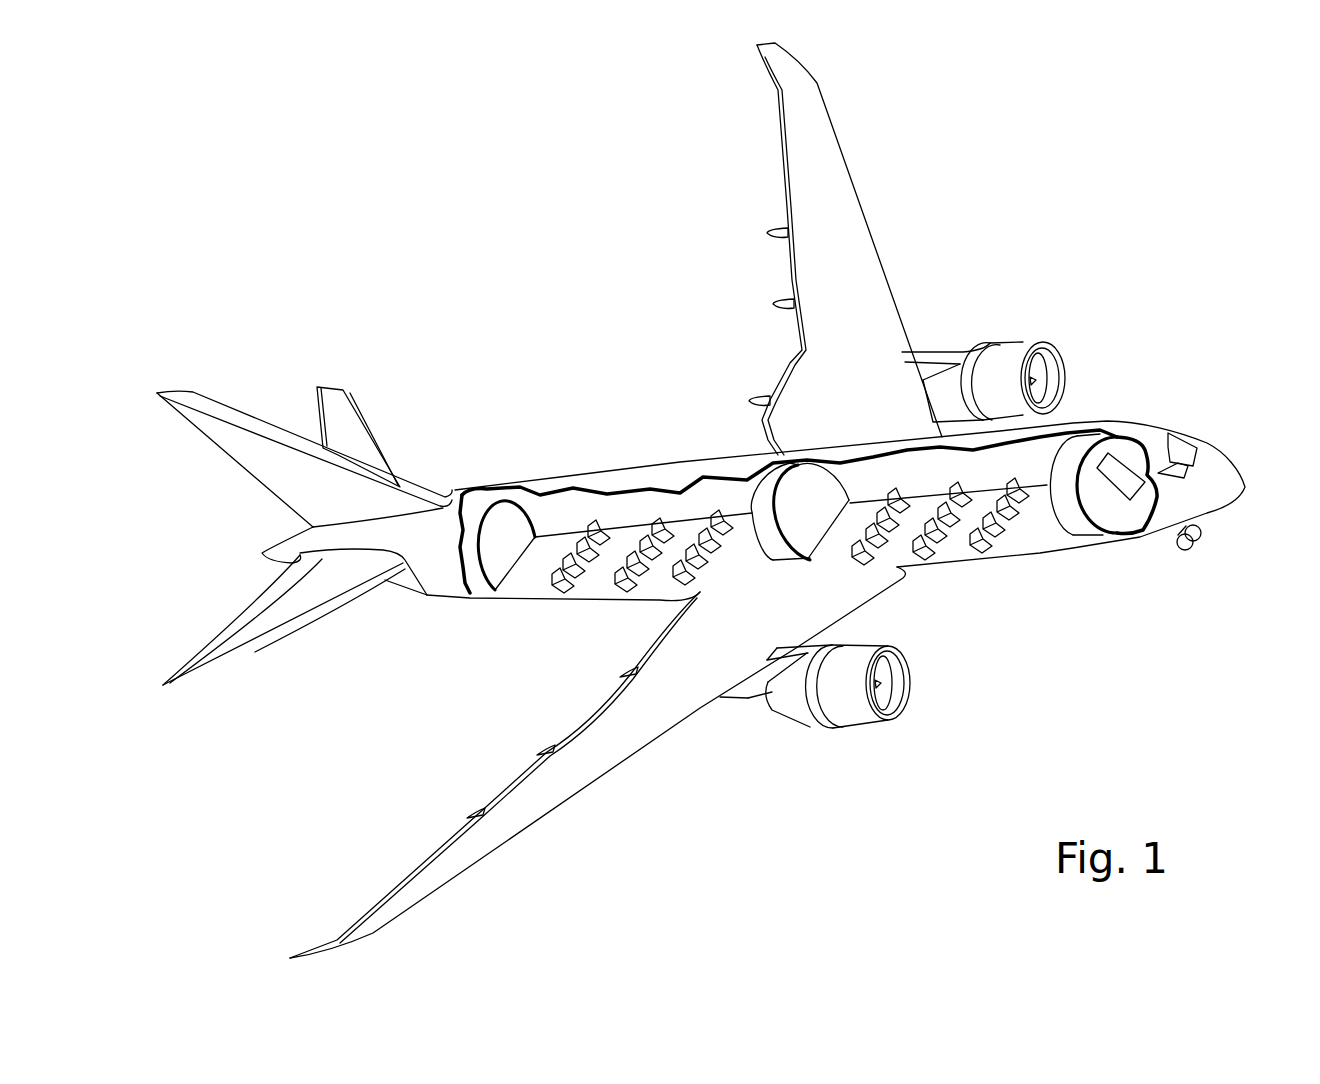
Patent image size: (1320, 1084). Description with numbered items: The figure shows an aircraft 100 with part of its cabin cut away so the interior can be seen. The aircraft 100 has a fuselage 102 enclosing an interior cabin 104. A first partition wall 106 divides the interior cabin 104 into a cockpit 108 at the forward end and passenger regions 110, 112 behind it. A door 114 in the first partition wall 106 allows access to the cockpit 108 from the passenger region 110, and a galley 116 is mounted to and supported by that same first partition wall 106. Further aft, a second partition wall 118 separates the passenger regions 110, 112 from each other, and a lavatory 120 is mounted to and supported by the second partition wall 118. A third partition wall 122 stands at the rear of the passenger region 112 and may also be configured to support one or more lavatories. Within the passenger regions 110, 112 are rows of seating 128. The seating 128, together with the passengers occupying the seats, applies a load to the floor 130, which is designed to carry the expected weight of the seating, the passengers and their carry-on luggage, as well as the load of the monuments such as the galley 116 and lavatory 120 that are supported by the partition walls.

The aircraft 100 is at (478, 309).
The fuselage 102 is at (562, 478).
The interior cabin 104 is at (930, 473).
The first partition wall 106 is at (1122, 448).
The cockpit 108 is at (1138, 510).
The passenger region 110 is at (953, 540).
The passenger region 112 is at (593, 517).
The door 114 is at (1113, 487).
The galley 116 is at (1067, 510).
The second partition wall 118 is at (807, 527).
The lavatory 120 is at (770, 540).
The third partition wall 122 is at (507, 513).
The seating 128 is at (643, 520).
The floor 130 is at (600, 573).